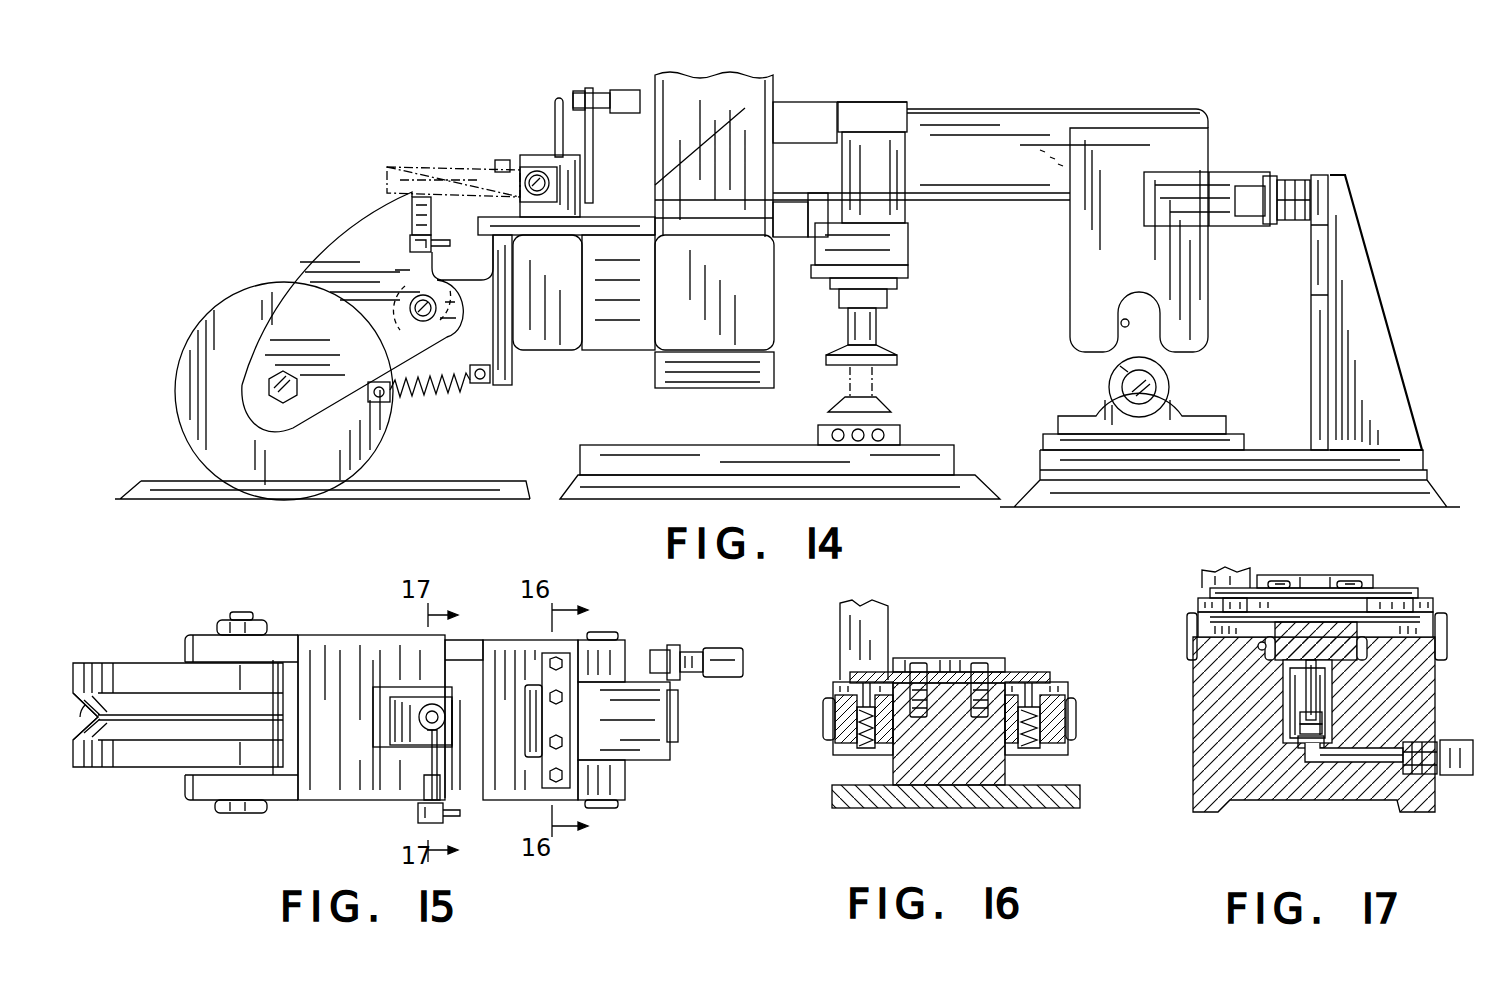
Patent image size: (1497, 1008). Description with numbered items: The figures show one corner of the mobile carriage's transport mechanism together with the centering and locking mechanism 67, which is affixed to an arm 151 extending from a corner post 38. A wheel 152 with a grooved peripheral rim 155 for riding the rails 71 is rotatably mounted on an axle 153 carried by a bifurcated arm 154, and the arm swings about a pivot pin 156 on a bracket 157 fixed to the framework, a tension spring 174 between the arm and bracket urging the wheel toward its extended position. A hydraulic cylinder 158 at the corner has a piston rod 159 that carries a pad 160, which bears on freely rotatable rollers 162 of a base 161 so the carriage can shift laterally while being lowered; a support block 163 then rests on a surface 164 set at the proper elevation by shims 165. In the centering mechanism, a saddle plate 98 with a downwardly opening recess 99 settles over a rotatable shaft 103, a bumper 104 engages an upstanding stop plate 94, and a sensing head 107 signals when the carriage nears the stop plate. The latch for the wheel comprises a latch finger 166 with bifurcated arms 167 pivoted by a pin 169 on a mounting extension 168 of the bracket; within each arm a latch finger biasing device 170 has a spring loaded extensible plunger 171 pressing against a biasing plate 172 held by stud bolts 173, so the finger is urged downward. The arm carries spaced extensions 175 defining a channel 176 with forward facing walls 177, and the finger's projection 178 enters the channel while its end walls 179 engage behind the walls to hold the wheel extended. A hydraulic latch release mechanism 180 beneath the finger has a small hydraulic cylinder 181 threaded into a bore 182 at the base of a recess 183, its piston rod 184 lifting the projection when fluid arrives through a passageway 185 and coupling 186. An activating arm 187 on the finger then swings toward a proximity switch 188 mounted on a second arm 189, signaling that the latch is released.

In FIG. 14, the corner post 38 is at (773, 92).
In FIG. 14, the centering and locking mechanism 67 is at (1285, 148).
In FIG. 14, the rail 71 is at (402, 481).
In FIG. 14, the stop plate 94 is at (1316, 262).
In FIG. 14, the saddle plate 98 is at (1085, 266).
In FIG. 14, the recess 99 is at (1122, 314).
In FIG. 14, the shaft 103 is at (1150, 380).
In FIG. 14, the bumper 104 is at (1300, 172).
In FIG. 14, the sensing head 107 is at (1290, 222).
In FIG. 14, the arm 151 is at (1040, 135).
In FIG. 14, the wheel 152 is at (185, 370).
In FIG. 15, the wheel 152 is at (133, 768).
In FIG. 14, the axle 153 is at (283, 403).
In FIG. 15, the axle 153 is at (238, 814).
In FIG. 14, the bifurcated arm 154 is at (290, 300).
In FIG. 15, the bifurcated arm 154 is at (305, 640).
In FIG. 17, the bifurcated arm 154 is at (1215, 745).
In FIG. 15, the peripheral rim 155 is at (90, 700).
In FIG. 14, the pivot pin 156 is at (410, 314).
In FIG. 14, the bracket 157 is at (508, 372).
In FIG. 14, the hydraulic cylinder 158 is at (905, 170).
In FIG. 14, the piston rod 159 is at (877, 325).
In FIG. 14, the pad 160 is at (897, 360).
In FIG. 14, the base 161 is at (1020, 492).
In FIG. 14, the roller 162 is at (890, 415).
In FIG. 14, the support block 163 is at (655, 378).
In FIG. 14, the surface 164 is at (648, 445).
In FIG. 14, the shim 165 is at (578, 470).
In FIG. 14, the latch finger 166 is at (462, 176).
In FIG. 15, the latch finger 166 is at (523, 640).
In FIG. 16, the latch finger 166 is at (835, 722).
In FIG. 17, the latch finger 166 is at (1205, 606).
In FIG. 15, the bifurcated arms 167 is at (620, 648).
In FIG. 14, the mounting extension 168 is at (585, 217).
In FIG. 15, the mounting extension 168 is at (650, 758).
In FIG. 16, the mounting extension 168 is at (955, 775).
In FIG. 14, the pin 169 is at (534, 178).
In FIG. 15, the pin 169 is at (602, 632).
In FIG. 16, the pin 169 is at (1076, 722).
In FIG. 16, the latch finger biasing device 170 is at (862, 750).
In FIG. 15, the spring loaded extensible plunger 171 is at (578, 750).
In FIG. 16, the spring loaded extensible plunger 171 is at (845, 692).
In FIG. 17, the spring loaded extensible plunger 171 is at (1230, 606).
In FIG. 15, the biasing plate 172 is at (540, 760).
In FIG. 16, the biasing plate 172 is at (1020, 672).
In FIG. 17, the biasing plate 172 is at (1392, 590).
In FIG. 16, the stud bolt 173 is at (978, 665).
In FIG. 17, the stud bolt 173 is at (1345, 588).
In FIG. 14, the tension spring 174 is at (402, 396).
In FIG. 15, the extension 175 is at (385, 662).
In FIG. 17, the extension 175 is at (1200, 648).
In FIG. 15, the channel 176 is at (405, 755).
In FIG. 17, the channel 176 is at (1258, 650).
In FIG. 15, the forward facing wall 177 is at (430, 660).
In FIG. 15, the projection 178 is at (390, 718).
In FIG. 17, the projection 178 is at (1303, 637).
In FIG. 15, the end wall 179 is at (462, 650).
In FIG. 17, the end wall 179 is at (1205, 625).
In FIG. 14, the hydraulic latch release mechanism 180 is at (398, 236).
In FIG. 15, the hydraulic latch release mechanism 180 is at (412, 820).
In FIG. 17, the hydraulic cylinder 181 is at (1330, 698).
In FIG. 17, the bore 182 is at (1302, 748).
In FIG. 17, the recess 183 is at (1332, 670).
In FIG. 17, the piston rod 184 is at (1306, 696).
In FIG. 17, the passageway 185 is at (1370, 762).
In FIG. 17, the coupling 186 is at (1452, 775).
In FIG. 14, the activating arm 187 is at (555, 108).
In FIG. 16, the activating arm 187 is at (850, 636).
In FIG. 17, the activating arm 187 is at (1220, 574).
In FIG. 14, the proximity switch 188 is at (622, 90).
In FIG. 15, the proximity switch 188 is at (724, 678).
In FIG. 14, the second arm 189 is at (595, 128).
In FIG. 15, the second arm 189 is at (420, 708).